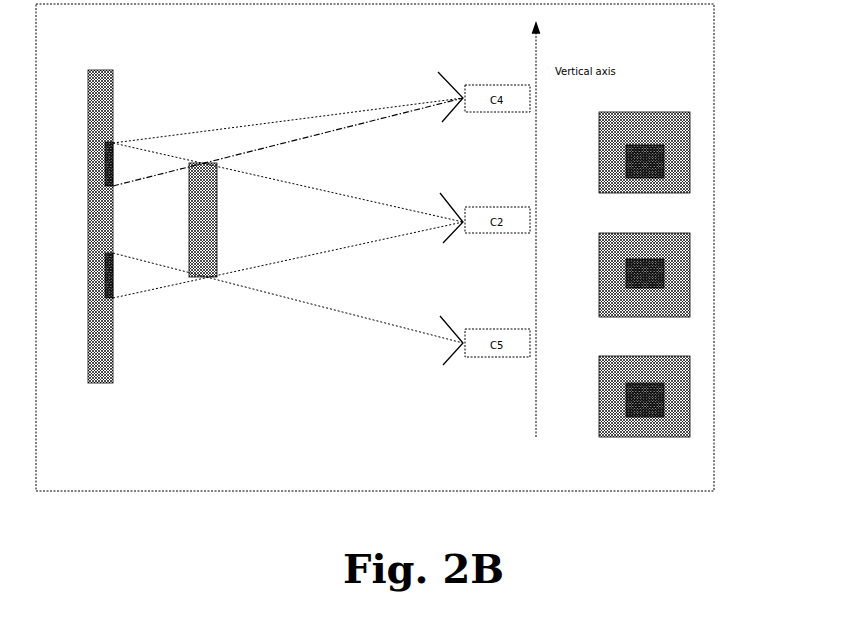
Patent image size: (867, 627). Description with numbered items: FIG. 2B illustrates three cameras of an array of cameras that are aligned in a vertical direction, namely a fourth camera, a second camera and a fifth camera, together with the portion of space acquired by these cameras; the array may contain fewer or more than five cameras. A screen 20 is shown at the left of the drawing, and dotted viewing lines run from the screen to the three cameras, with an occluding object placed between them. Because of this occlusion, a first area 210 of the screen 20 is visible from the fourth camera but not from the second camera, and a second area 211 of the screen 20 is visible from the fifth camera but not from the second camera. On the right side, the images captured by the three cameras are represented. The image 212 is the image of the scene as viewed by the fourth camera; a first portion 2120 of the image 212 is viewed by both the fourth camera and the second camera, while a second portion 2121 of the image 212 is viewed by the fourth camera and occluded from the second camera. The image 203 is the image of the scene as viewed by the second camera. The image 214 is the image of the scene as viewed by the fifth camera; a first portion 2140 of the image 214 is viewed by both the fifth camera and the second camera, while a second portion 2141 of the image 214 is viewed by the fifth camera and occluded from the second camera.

The screen 20 is at (90, 104).
The first area 210 is at (114, 158).
The second area 211 is at (116, 283).
The image 212 is at (605, 112).
The second portion 2121 is at (660, 148).
The first portion 2120 is at (652, 164).
The image 203 is at (674, 297).
The image 214 is at (657, 436).
The first portion 2140 is at (650, 396).
The second portion 2141 is at (656, 412).